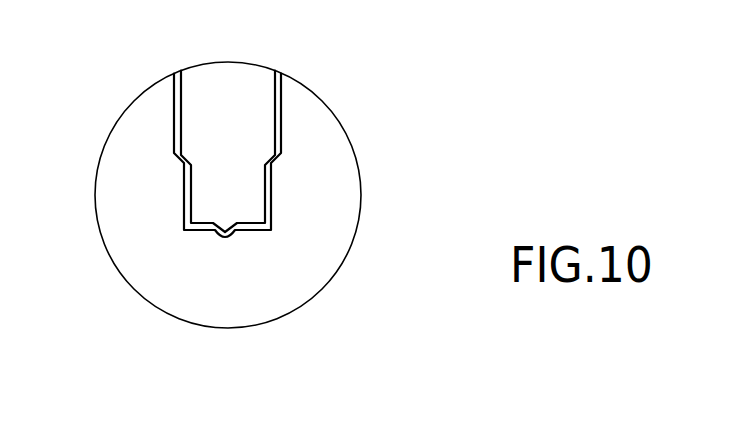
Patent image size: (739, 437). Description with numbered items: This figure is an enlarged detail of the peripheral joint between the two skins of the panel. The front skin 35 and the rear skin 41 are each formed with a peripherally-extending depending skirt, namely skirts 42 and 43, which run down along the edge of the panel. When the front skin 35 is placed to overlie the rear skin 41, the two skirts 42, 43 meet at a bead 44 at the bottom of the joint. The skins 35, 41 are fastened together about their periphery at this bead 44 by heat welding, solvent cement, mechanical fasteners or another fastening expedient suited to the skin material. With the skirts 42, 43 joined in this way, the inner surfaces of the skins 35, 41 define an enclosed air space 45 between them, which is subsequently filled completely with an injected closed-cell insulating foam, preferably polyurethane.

The front skin 35 is at (174, 116).
The rear skin 41 is at (283, 115).
The skirt 42 is at (200, 235).
The skirt 43 is at (255, 235).
The bead 44 is at (228, 242).
The air space 45 is at (233, 93).